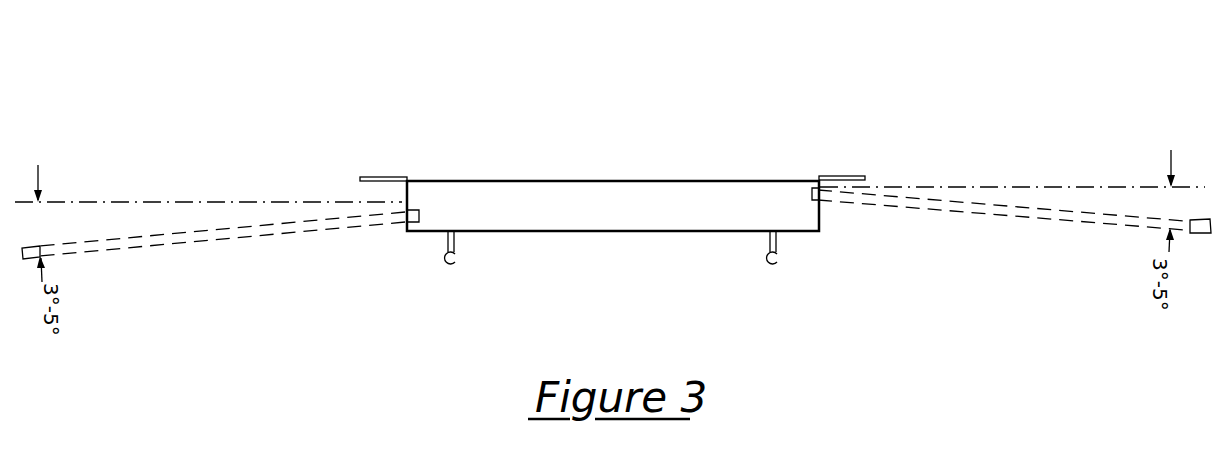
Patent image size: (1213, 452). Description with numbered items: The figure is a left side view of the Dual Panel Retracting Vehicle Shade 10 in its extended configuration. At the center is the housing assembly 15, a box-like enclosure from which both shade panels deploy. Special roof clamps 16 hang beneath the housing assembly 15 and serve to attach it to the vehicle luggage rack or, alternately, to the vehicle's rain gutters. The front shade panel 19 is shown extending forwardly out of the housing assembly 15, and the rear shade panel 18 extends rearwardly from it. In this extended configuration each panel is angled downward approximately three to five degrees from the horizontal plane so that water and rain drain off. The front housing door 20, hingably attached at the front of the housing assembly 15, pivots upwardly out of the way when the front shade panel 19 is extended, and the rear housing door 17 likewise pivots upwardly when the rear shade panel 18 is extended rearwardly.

The Dual Panel Retracting Vehicle Shade 10 is at (633, 159).
The housing assembly 15 is at (566, 181).
The roof clamps 16 is at (777, 264).
The rear housing door 17 is at (846, 177).
The rear shade panel 18 is at (1025, 219).
The front shade panel 19 is at (226, 242).
The front housing door 20 is at (371, 178).